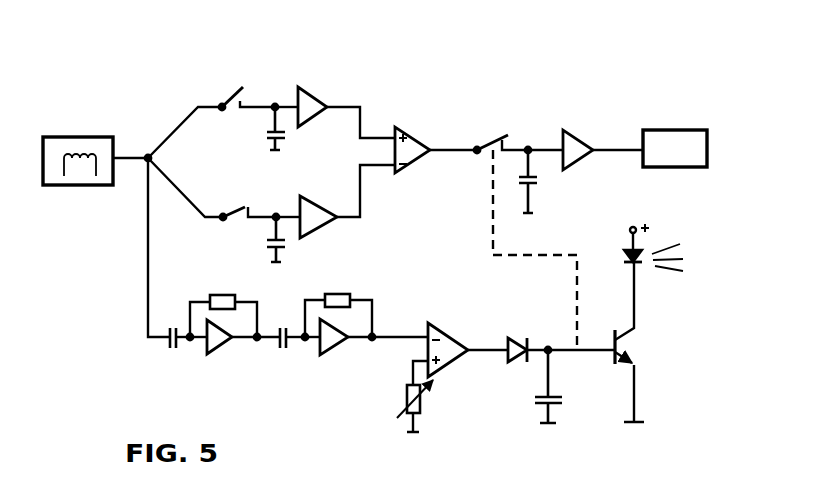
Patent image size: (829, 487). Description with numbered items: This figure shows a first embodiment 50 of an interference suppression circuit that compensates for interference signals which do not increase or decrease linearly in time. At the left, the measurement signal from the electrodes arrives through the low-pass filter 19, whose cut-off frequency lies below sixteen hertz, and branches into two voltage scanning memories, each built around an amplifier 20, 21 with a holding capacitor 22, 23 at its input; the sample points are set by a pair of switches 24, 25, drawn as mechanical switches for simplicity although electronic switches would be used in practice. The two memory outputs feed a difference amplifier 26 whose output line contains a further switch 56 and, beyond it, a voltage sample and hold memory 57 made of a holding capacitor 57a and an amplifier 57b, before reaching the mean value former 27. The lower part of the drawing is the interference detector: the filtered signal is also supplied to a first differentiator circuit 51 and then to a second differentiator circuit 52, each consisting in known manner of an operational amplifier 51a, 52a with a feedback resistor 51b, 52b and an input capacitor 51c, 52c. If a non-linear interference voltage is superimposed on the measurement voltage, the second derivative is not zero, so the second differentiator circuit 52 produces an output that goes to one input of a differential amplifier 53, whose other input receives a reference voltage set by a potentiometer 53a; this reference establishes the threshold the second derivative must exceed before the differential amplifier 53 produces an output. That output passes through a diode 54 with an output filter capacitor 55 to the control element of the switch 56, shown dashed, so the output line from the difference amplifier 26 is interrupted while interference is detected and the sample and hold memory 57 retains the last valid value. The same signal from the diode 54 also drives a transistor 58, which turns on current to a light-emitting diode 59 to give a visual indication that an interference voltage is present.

The low-pass filter 19 is at (67, 145).
The amplifier 20 is at (315, 93).
The amplifier 21 is at (310, 212).
The holding capacitor 22 is at (268, 136).
The holding capacitor 23 is at (286, 246).
The switch 24 is at (230, 93).
The switch 25 is at (236, 218).
The difference amplifier 26 is at (422, 137).
The mean value former 27 is at (667, 138).
The first embodiment of an interference suppression circuit 50 is at (433, 106).
The first differentiator circuit 51 is at (191, 283).
The operational amplifier 51a is at (208, 345).
The feedback resistor 51b is at (215, 293).
The input capacitor 51c is at (168, 332).
The second differentiator circuit 52 is at (345, 335).
The operational amplifier 52a is at (333, 348).
The feedback resistor 52b is at (339, 297).
The input capacitor 52c is at (290, 341).
The differential amplifier 53 is at (452, 387).
The potentiometer 53a is at (422, 414).
The diode 54 is at (517, 337).
The output filter capacitor 55 is at (558, 398).
The switch 56 is at (488, 138).
The voltage sample and hold memory 57 is at (545, 156).
The holding capacitor 57a is at (523, 188).
The amplifier 57b is at (580, 137).
The transistor 58 is at (632, 347).
The light-emitting diode 59 is at (625, 257).